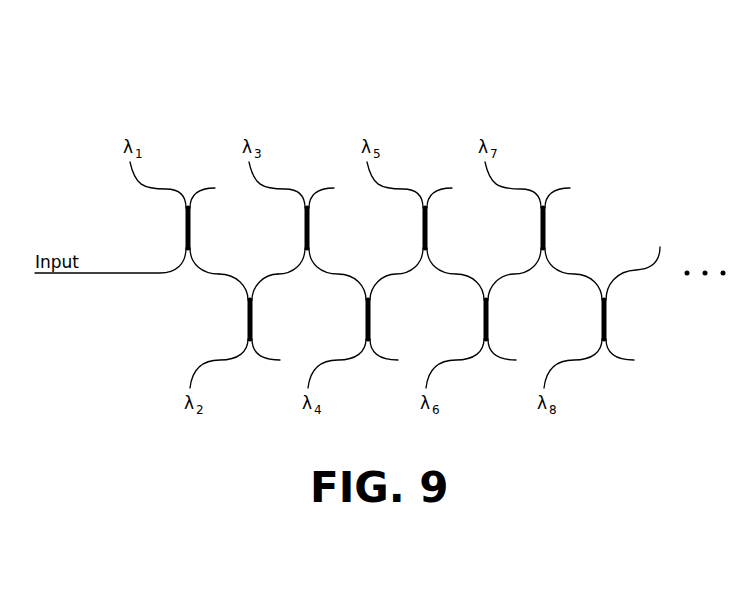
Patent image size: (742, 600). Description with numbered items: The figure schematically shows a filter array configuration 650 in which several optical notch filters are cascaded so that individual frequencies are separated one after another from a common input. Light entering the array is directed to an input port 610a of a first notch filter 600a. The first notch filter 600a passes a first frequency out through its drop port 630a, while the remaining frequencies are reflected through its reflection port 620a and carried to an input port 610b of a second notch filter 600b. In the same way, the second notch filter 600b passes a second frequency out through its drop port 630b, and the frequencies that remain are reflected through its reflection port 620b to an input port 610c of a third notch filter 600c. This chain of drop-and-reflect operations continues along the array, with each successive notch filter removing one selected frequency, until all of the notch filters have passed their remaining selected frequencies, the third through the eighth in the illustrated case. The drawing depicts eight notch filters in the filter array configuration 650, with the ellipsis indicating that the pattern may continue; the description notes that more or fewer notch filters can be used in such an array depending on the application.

The first notch filter 600a is at (185, 220).
The second notch filter 600b is at (253, 312).
The third notch filter 600c is at (310, 233).
The input port 610a is at (187, 253).
The input port 610b is at (235, 280).
The input port 610c is at (303, 252).
The reflection port 620a is at (204, 269).
The reflection port 620b is at (270, 280).
The drop port 630a is at (133, 178).
The drop port 630b is at (188, 378).
The filter array configuration 650 is at (438, 80).